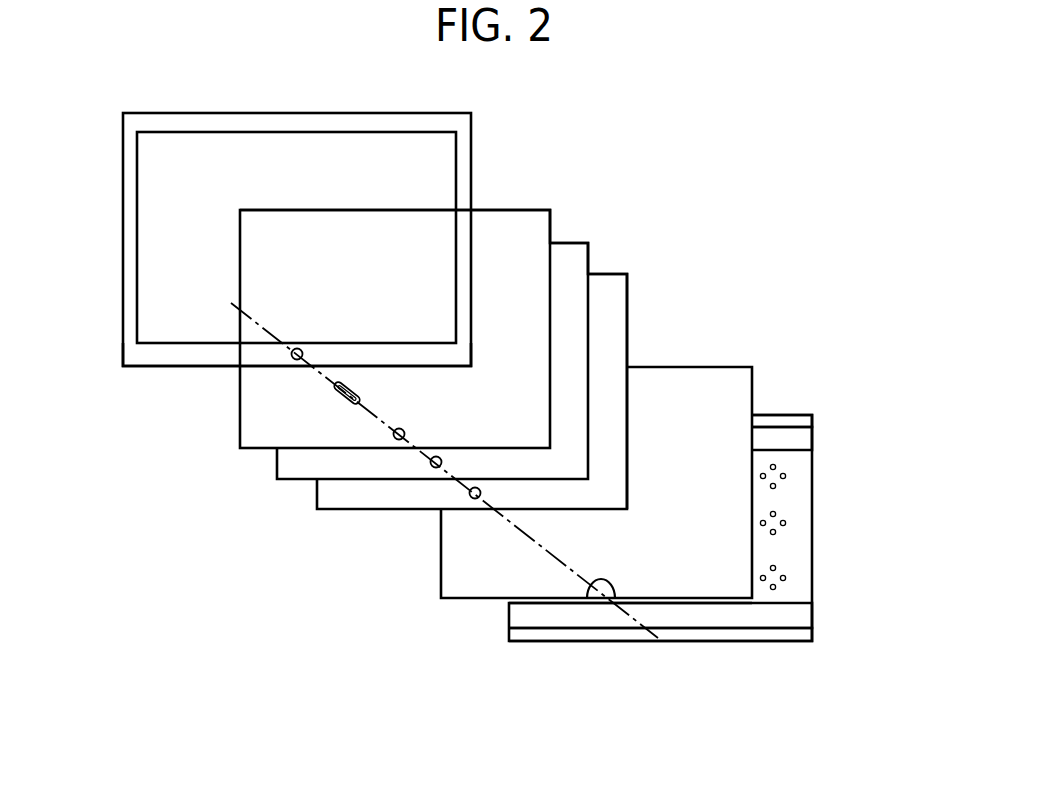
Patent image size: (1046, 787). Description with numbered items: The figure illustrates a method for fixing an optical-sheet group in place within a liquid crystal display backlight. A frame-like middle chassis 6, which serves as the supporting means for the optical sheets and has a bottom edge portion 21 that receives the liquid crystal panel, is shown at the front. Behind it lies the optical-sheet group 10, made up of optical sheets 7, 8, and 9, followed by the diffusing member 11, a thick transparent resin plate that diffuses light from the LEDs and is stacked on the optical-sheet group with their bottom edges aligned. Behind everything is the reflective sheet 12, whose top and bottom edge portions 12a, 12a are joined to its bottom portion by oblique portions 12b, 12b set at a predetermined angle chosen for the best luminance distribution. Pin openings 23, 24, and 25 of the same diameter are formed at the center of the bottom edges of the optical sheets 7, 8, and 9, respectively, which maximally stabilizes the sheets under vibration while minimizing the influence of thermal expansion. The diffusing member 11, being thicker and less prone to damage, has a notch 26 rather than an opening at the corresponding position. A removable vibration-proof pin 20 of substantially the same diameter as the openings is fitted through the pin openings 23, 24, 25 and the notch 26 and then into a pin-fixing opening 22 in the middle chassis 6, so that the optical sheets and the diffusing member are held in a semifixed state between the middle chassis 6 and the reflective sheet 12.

The middle chassis 6 is at (265, 120).
The optical sheet 7 is at (532, 217).
The optical sheet 8 is at (572, 248).
The optical sheet 9 is at (610, 282).
The optical-sheet group 10 is at (649, 223).
The diffusing member 11 is at (707, 378).
The reflective sheet 12 is at (805, 498).
The top and bottom edge portions 12a is at (785, 418).
The oblique portions 12b is at (802, 437).
The vibration-proof pin 20 is at (345, 402).
The bottom edge portion 21 is at (183, 355).
The pin-fixing opening 22 is at (297, 360).
The pin opening 23 is at (399, 440).
The pin opening 24 is at (436, 468).
The pin opening 25 is at (475, 499).
The notch 26 is at (597, 592).